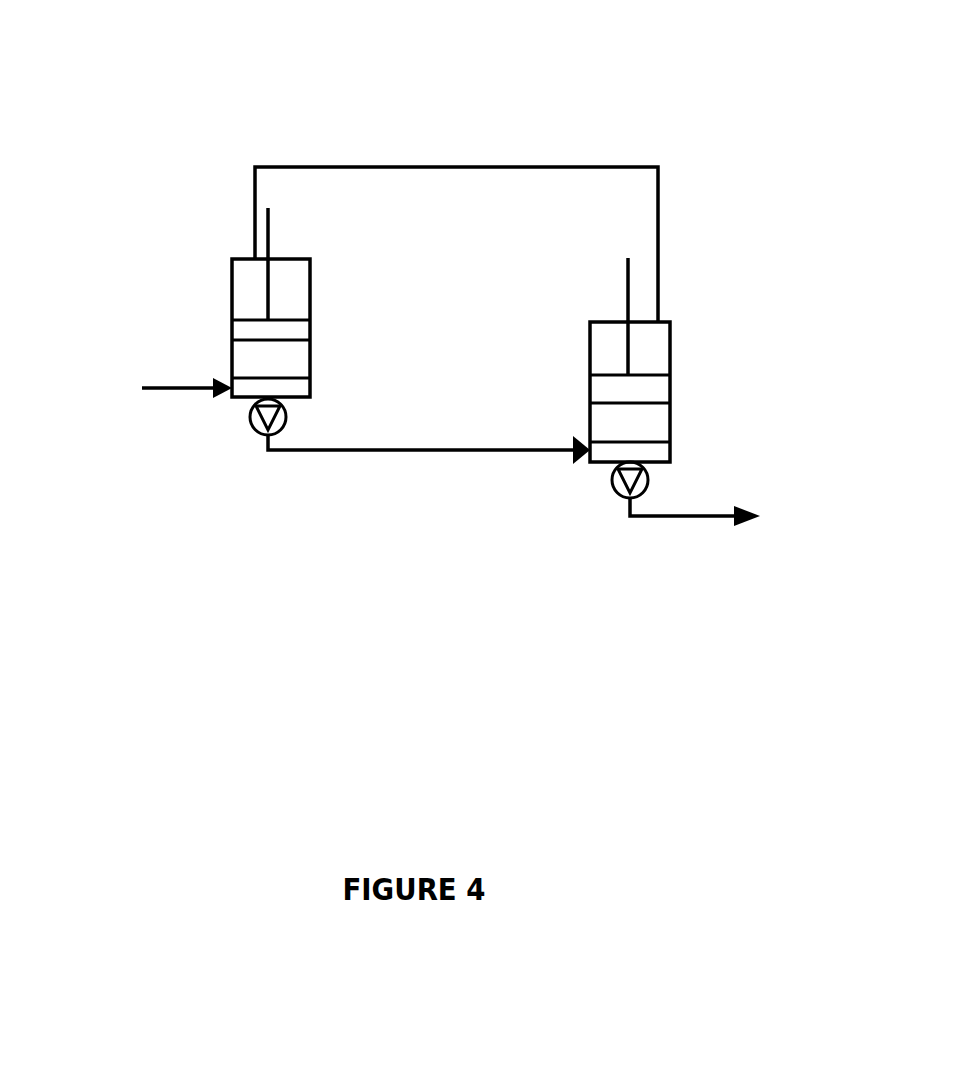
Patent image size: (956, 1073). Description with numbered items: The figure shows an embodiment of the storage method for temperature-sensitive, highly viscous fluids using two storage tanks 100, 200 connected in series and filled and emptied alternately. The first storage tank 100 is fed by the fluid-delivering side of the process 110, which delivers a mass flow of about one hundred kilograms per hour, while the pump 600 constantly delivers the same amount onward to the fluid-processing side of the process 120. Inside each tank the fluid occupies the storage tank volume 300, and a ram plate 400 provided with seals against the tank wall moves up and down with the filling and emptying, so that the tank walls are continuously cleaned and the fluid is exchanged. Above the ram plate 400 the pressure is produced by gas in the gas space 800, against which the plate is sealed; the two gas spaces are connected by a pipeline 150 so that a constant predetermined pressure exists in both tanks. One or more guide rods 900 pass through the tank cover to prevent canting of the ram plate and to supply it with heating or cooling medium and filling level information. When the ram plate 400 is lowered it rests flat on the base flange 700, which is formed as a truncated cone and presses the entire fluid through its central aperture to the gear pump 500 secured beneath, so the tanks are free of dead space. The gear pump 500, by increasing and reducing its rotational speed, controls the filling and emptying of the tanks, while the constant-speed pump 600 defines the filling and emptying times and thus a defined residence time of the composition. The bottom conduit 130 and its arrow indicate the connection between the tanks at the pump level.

The storage tank 100 is at (227, 295).
The fluid-delivering side of the process 110 is at (149, 388).
The fluid-processing side of the process 120 is at (723, 513).
The transfer conduit 130 is at (438, 448).
The pipeline 150 is at (662, 187).
The storage tank 200 is at (667, 332).
The storage tank volume 300 is at (267, 352).
The ram plate 400 is at (610, 387).
The gear pump 500 is at (255, 427).
The pump 600 is at (650, 473).
The base flange 700 is at (274, 387).
The gas space 800 is at (612, 343).
The guide rods 900 is at (628, 273).